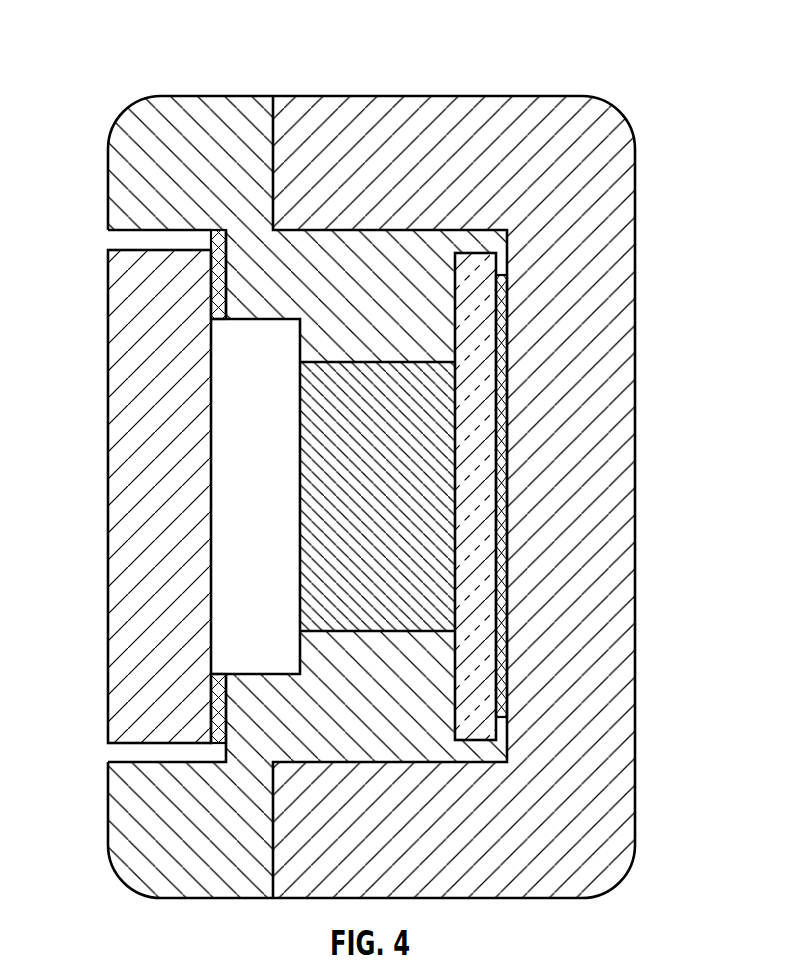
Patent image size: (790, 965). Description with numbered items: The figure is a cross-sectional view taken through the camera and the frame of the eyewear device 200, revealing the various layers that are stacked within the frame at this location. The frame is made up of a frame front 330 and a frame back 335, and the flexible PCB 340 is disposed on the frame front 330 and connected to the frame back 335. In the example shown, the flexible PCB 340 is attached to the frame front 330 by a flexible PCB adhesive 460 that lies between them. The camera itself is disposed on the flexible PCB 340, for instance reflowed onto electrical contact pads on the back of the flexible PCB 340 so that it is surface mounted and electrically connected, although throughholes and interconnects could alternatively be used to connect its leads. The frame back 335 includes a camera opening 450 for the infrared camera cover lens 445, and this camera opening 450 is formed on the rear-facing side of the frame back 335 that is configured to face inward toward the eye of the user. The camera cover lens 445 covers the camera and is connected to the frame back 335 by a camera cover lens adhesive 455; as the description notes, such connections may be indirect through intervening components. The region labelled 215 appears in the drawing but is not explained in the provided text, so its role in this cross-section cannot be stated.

The eyewear device 200 is at (117, 45).
The core member 215 is at (317, 598).
The frame front 330 is at (627, 268).
The frame back 335 is at (118, 165).
The flexible PCB 340 is at (483, 480).
The camera cover lens 445 is at (118, 317).
The camera opening 450 is at (118, 243).
The camera cover lens adhesive 455 is at (211, 728).
The flexible PCB adhesive 460 is at (500, 427).